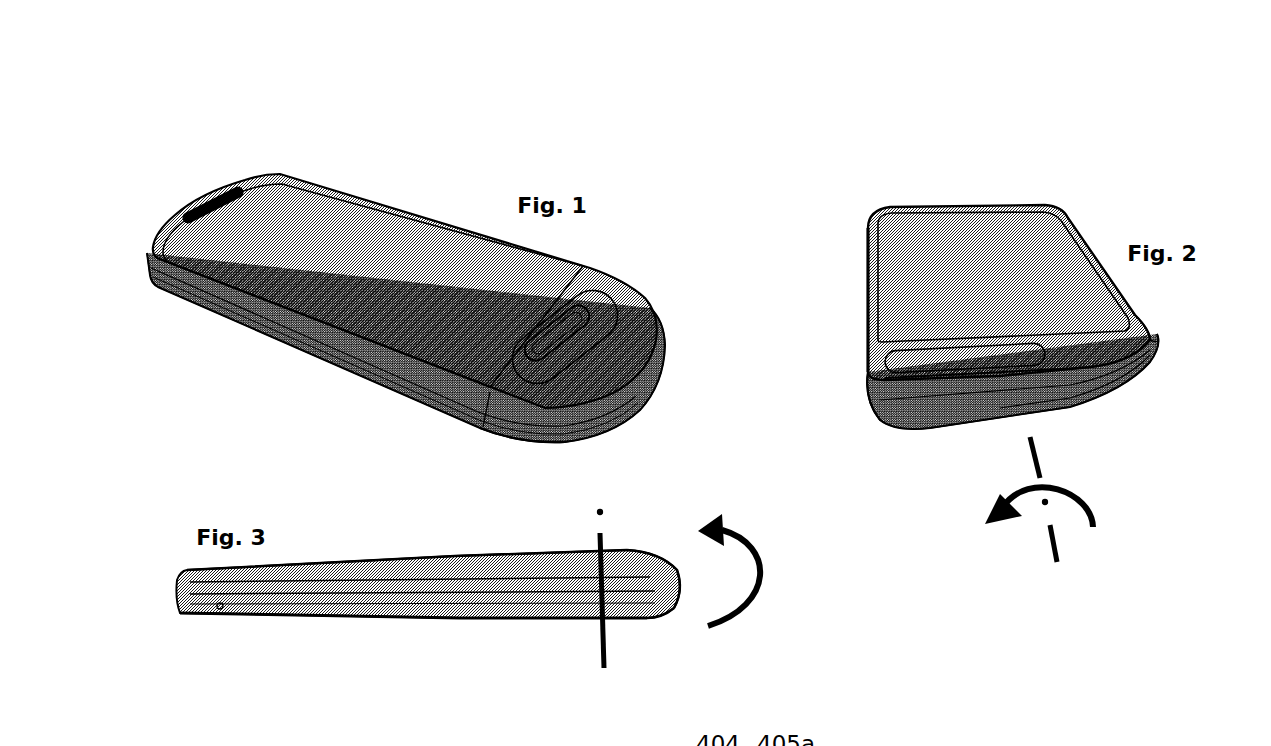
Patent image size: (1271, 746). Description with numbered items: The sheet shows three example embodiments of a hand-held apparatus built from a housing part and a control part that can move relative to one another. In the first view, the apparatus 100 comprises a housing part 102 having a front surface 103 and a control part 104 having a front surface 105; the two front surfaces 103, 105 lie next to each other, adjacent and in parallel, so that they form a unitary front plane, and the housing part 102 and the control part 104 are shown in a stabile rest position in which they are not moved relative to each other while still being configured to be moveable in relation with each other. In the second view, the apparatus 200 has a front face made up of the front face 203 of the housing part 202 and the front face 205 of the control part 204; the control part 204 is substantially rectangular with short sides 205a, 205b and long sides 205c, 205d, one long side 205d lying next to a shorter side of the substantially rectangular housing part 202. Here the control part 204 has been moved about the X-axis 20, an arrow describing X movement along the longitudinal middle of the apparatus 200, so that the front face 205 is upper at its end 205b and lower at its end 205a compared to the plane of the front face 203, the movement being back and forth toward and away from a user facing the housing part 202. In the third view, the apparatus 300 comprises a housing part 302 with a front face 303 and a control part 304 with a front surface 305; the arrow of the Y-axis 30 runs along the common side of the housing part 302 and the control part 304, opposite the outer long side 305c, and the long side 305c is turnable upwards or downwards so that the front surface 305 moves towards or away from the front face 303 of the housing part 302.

In FIG. 1, the apparatus 100 is at (387, 196).
In FIG. 1, the housing part 102 is at (236, 325).
In FIG. 1, the front surface 103 is at (392, 300).
In FIG. 1, the control part 104 is at (490, 418).
In FIG. 1, the front surface 105 is at (612, 347).
In FIG. 2, the apparatus 200 is at (980, 183).
In FIG. 2, the housing part 202 is at (863, 250).
In FIG. 2, the front face 203 is at (910, 270).
In FIG. 2, the control part 204 is at (890, 417).
In FIG. 2, the front face 205 is at (947, 390).
In FIG. 2, the short side 205a is at (867, 400).
In FIG. 2, the short side 205b is at (1153, 347).
In FIG. 2, the long side 205c is at (1067, 383).
In FIG. 2, the long side 205d is at (862, 360).
In FIG. 2, the X-axis 20 is at (1056, 514).
In FIG. 3, the apparatus 300 is at (318, 549).
In FIG. 3, the housing part 302 is at (423, 603).
In FIG. 3, the front face 303 is at (460, 567).
In FIG. 3, the control part 304 is at (577, 610).
In FIG. 3, the front surface 305 is at (633, 567).
In FIG. 3, the long side 305c is at (670, 603).
In FIG. 3, the Y-axis 30 is at (688, 585).